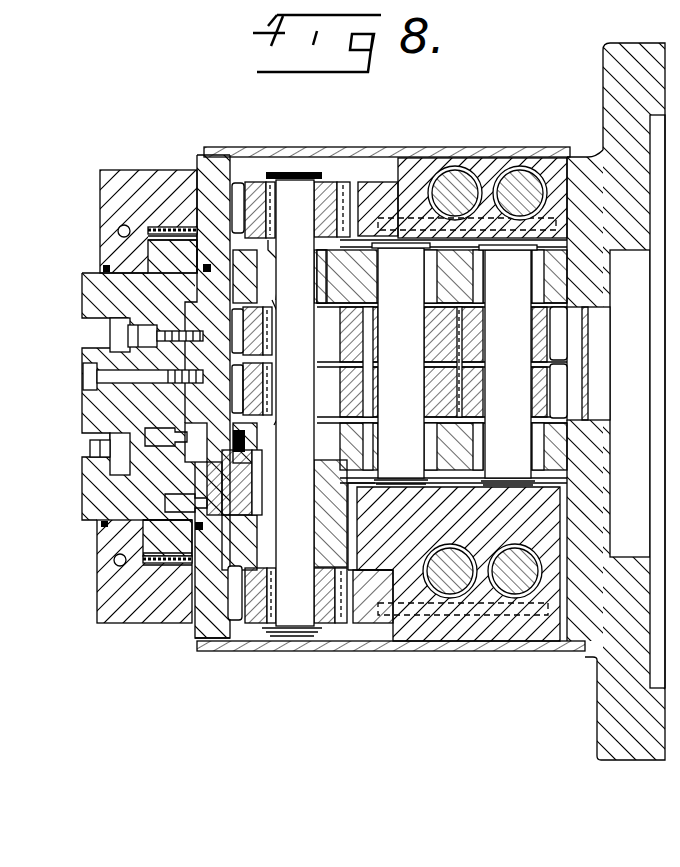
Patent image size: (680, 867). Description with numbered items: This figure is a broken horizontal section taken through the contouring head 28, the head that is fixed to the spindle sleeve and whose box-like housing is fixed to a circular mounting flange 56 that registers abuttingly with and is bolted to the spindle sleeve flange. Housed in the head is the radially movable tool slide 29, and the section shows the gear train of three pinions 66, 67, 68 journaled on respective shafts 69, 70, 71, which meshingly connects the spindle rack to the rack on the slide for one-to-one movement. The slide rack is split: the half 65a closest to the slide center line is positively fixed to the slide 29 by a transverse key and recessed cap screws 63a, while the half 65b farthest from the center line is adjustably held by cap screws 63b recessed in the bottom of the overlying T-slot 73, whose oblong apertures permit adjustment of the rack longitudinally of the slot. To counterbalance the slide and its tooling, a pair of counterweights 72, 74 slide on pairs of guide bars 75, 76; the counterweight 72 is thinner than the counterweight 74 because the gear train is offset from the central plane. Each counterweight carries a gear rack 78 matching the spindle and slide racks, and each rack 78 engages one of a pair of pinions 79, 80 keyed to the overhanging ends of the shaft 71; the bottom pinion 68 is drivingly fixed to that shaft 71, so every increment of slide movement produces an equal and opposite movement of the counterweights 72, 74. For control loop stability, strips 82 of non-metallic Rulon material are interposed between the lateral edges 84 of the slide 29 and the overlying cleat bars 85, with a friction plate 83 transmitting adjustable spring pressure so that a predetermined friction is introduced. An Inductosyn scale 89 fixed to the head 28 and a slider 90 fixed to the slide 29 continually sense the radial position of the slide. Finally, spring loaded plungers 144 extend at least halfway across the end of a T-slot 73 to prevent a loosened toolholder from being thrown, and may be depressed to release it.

The contouring head 28 is at (286, 656).
The radial slide 29 is at (82, 283).
The circular mounting flange 56 is at (603, 50).
The recessed cap screws 63a is at (84, 377).
The cap screws 63b is at (145, 338).
The rack half 65a is at (200, 398).
The rack half 65b is at (264, 306).
The pinion 66 is at (590, 323).
The pinion 67 is at (435, 378).
The pinion 68 is at (257, 348).
The shaft 69 is at (521, 302).
The shaft 70 is at (413, 458).
The shaft 71 is at (308, 463).
The counterweight 72 is at (426, 158).
The T-slot 73 is at (112, 331).
The counterweight 74 is at (412, 634).
The guide bar 75 is at (462, 180).
The guide bar 76 is at (517, 180).
The gear rack 78 is at (378, 188).
The pinion 79 is at (240, 186).
The pinion 80 is at (245, 612).
The non-metallic strips 82 is at (150, 241).
The friction plate 83 is at (150, 232).
The lateral edges 84 is at (176, 228).
The cleat bars 85 is at (105, 172).
The Inductosyn scale 89 is at (212, 498).
The slider 90 is at (197, 464).
The spring loaded plungers 144 is at (90, 447).